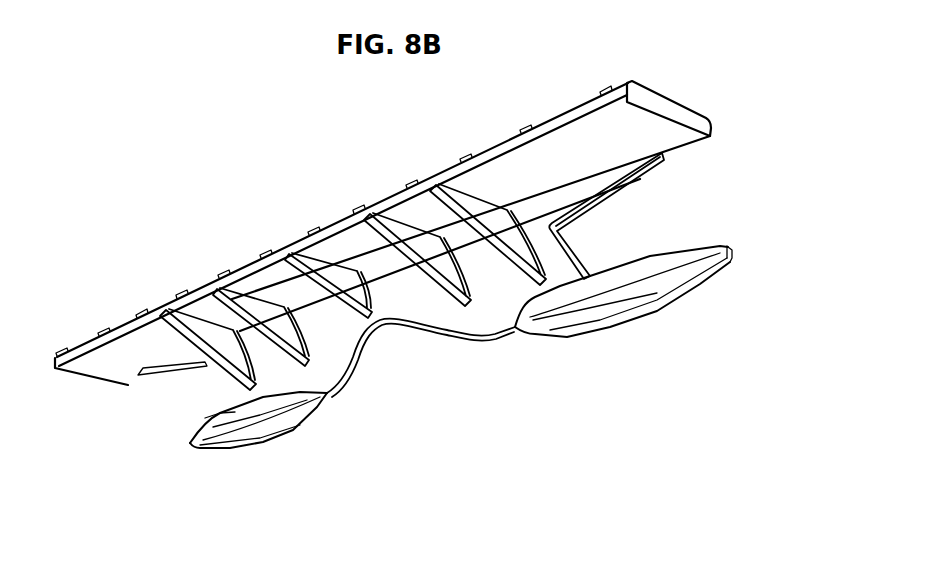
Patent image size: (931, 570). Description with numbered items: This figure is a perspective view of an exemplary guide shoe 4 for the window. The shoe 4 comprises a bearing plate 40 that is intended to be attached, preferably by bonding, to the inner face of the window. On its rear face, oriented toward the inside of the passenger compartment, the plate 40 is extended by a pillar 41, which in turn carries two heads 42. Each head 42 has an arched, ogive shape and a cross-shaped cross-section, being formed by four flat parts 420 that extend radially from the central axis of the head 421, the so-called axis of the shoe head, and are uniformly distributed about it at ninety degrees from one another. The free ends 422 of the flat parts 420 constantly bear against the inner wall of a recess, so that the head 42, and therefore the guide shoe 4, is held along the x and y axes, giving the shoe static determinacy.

The guide shoe 4 is at (341, 162).
The bearing plate 40 is at (549, 179).
The pillar 41 is at (508, 312).
The head 42 is at (283, 450).
The flat parts 420 is at (238, 440).
The central axis of the head 421 is at (740, 252).
The free ends 422 is at (211, 411).